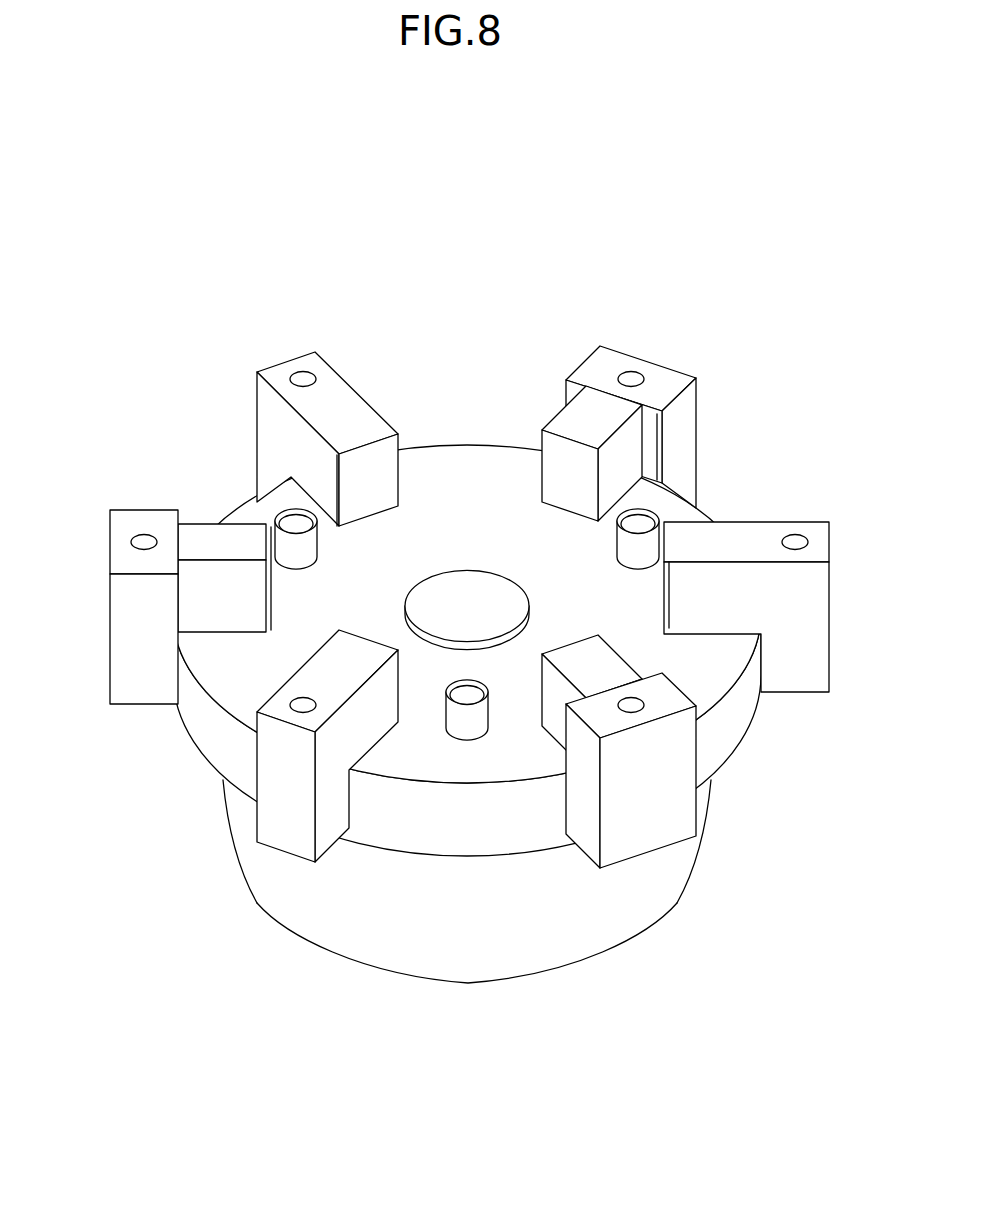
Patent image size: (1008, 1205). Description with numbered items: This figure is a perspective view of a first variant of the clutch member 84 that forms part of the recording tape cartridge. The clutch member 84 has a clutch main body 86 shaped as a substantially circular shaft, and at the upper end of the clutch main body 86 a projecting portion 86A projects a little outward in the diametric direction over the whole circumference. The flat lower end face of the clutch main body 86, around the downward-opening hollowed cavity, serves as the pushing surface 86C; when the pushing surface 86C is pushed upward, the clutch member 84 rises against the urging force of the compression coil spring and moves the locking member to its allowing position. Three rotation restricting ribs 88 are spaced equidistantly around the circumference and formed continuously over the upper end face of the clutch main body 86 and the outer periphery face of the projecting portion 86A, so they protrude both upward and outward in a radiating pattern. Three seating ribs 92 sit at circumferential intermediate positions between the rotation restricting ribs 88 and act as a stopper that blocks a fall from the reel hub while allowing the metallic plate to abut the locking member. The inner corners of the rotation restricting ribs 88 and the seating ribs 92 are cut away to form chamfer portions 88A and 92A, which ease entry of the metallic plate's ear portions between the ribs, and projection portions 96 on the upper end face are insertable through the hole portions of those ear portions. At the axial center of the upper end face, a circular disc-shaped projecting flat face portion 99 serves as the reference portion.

The clutch member 84 is at (708, 242).
The clutch main body 86 is at (467, 911).
The projecting portion 86A is at (202, 728).
The pushing surface 86C is at (520, 980).
The rotation restricting rib 88 is at (543, 622).
The chamfer portion 88A is at (342, 512).
The seating rib 92 is at (394, 617).
The chamfer portion 92A is at (593, 512).
The projection portion 96 is at (290, 520).
The projecting flat face portion 99 is at (465, 587).